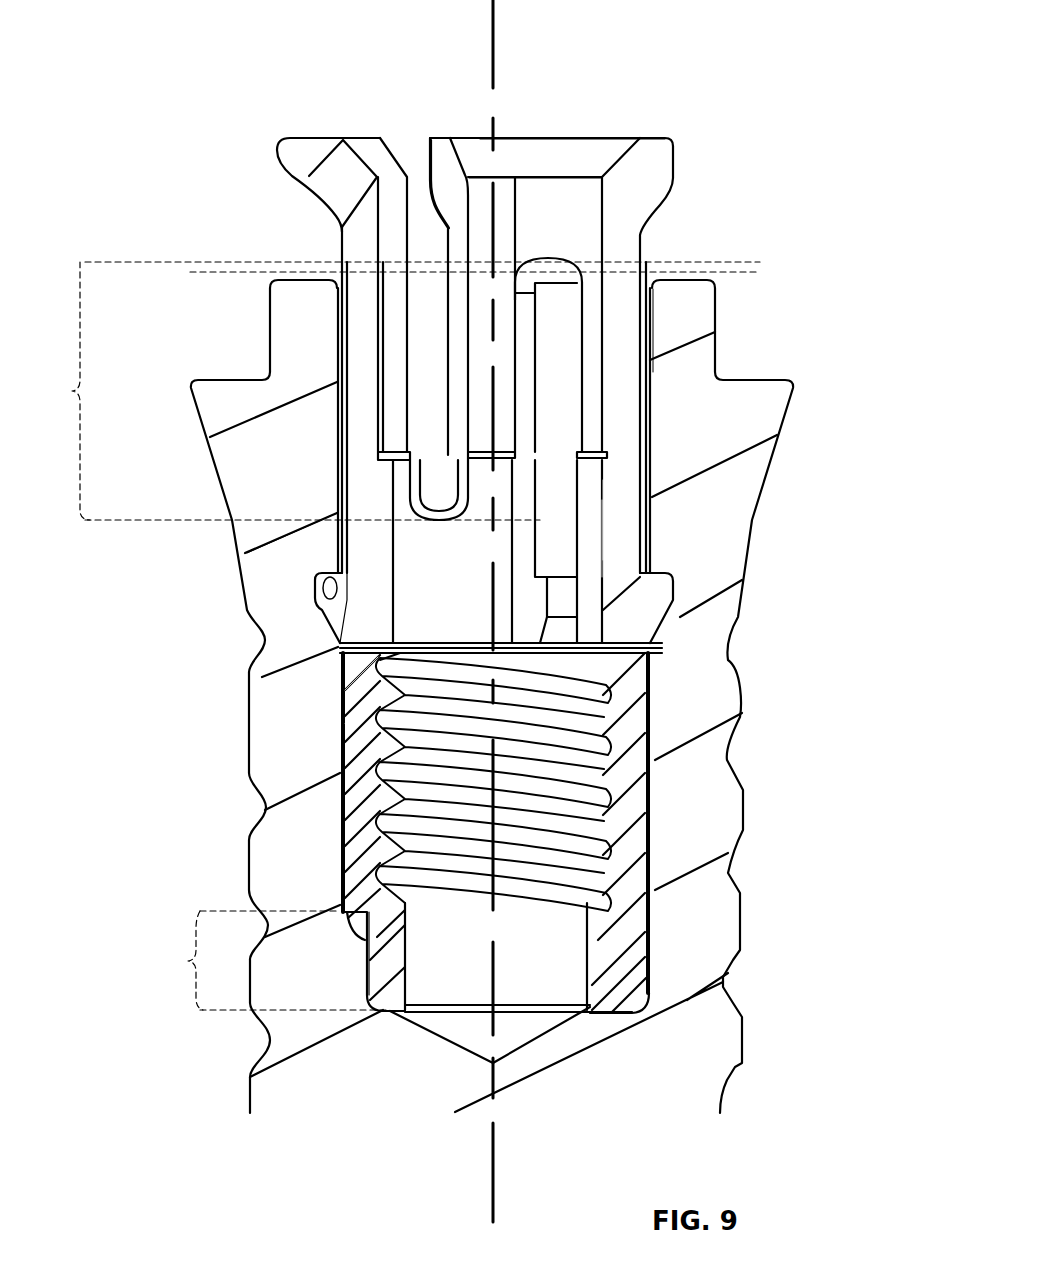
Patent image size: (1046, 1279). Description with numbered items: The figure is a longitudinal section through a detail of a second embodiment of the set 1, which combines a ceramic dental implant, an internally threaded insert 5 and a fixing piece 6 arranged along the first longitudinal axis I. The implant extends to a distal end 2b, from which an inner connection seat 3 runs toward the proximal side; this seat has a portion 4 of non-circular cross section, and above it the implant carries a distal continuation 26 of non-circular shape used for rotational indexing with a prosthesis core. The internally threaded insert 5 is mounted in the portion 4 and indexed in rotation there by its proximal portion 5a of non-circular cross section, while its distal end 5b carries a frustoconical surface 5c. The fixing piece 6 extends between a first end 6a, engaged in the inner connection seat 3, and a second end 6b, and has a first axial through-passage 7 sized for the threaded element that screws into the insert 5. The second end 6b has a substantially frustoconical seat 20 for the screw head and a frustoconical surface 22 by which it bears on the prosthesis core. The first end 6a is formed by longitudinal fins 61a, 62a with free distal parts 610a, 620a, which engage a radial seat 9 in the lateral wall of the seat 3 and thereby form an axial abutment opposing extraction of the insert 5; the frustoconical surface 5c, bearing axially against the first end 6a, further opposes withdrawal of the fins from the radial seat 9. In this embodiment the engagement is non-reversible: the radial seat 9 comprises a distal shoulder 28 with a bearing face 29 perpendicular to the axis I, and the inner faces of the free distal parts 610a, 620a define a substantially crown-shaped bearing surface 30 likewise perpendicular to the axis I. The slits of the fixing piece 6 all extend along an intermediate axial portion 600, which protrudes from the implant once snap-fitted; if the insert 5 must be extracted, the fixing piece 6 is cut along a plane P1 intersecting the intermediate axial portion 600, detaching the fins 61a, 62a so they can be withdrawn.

The set 1 is at (812, 645).
The distal end 2b is at (768, 403).
The inner connection seat 3 is at (335, 490).
The portion of non-circular cross section 4 is at (277, 960).
The internally threaded insert 5 is at (628, 803).
The proximal portion 5a is at (395, 970).
The distal end 5b is at (362, 718).
The frustoconical surface 5c is at (352, 666).
The fixing piece 6 is at (650, 236).
The first end 6a is at (313, 609).
The second end 6b is at (654, 128).
The first axial through-passage 7 is at (548, 200).
The radial seat 9 is at (678, 582).
The frustoconical seat 20 is at (470, 145).
The frustoconical surface 22 is at (300, 174).
The distal continuation 26 is at (700, 308).
The distal shoulder 28 is at (337, 565).
The bearing face 29 is at (655, 563).
The bearing surface 30 is at (315, 585).
The longitudinal fin 61a is at (366, 538).
The longitudinal fin 62a is at (628, 545).
The intermediate axial portion 600 is at (391, 391).
The free distal part 610a is at (330, 640).
The free distal part 620a is at (660, 620).
The plane P1 is at (205, 272).
The first longitudinal axis I is at (496, 611).